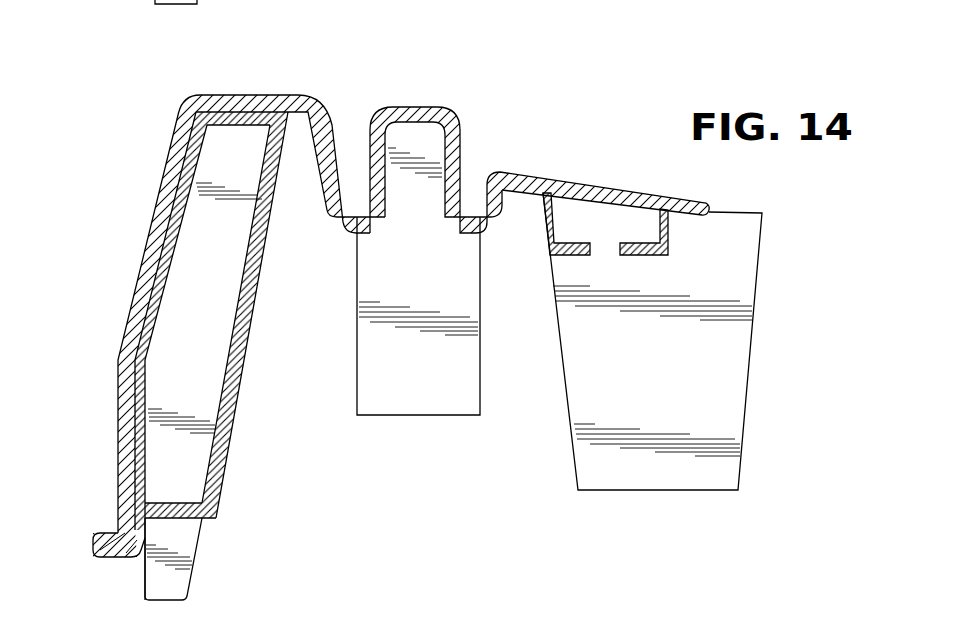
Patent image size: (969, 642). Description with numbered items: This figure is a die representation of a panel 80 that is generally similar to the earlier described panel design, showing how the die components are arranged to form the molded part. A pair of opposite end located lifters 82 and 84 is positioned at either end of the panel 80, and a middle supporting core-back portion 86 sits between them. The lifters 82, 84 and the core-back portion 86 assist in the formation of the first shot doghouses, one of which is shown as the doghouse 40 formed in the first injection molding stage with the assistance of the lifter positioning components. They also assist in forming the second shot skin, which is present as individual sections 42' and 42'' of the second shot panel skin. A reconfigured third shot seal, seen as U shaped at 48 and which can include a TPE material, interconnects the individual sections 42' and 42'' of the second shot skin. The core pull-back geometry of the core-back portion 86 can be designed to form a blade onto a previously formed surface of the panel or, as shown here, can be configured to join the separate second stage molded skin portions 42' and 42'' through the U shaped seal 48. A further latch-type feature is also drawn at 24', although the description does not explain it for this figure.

The panel 80 is at (111, 219).
The second shot panel skin section 42' is at (290, 122).
The U shaped third shot seal 48 is at (412, 106).
The second shot panel skin section 42'' is at (592, 162).
The lifter 82 is at (195, 370).
The doghouse 40 is at (260, 298).
The middle supporting core-back portion 86 is at (418, 400).
The lifter 84 is at (583, 393).
The latch hook 24' is at (635, 247).